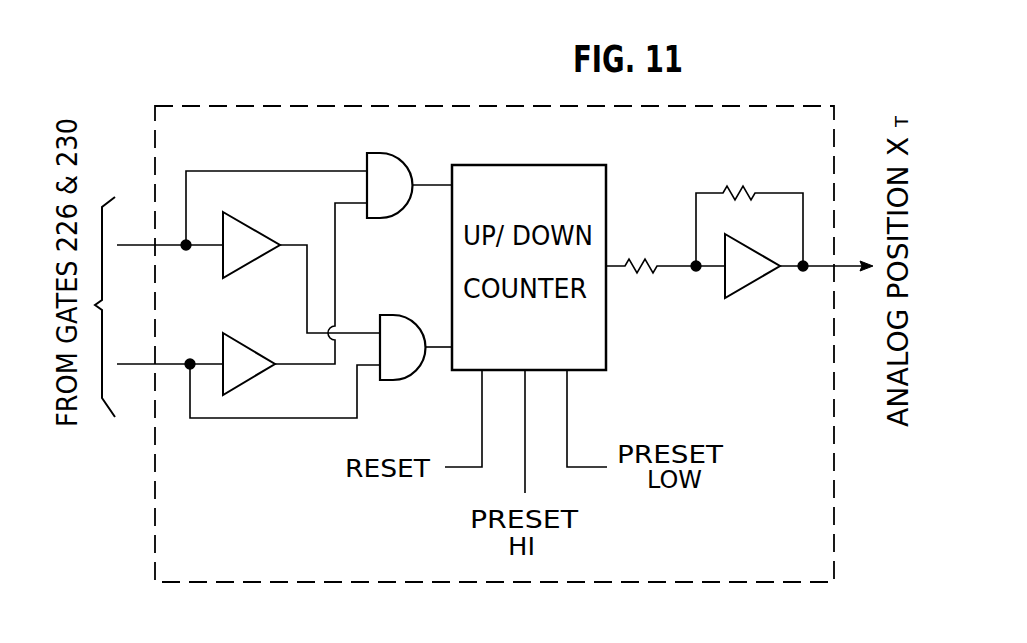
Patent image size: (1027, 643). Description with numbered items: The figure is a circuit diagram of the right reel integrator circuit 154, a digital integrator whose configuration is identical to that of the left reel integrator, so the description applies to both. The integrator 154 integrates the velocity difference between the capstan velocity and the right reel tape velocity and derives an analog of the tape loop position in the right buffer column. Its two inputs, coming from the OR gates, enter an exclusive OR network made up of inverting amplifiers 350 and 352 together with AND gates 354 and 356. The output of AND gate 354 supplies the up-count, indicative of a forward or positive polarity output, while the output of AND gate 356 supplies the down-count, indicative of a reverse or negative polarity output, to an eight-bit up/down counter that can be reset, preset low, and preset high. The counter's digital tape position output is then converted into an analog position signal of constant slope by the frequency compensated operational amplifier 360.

The right reel integrator circuit 154 is at (392, 105).
The inverting amplifier 350 is at (241, 222).
The inverting amplifier 352 is at (237, 340).
The AND gate 354 is at (367, 160).
The AND gate 356 is at (412, 316).
The frequency compensated operational amplifier 360 is at (745, 284).